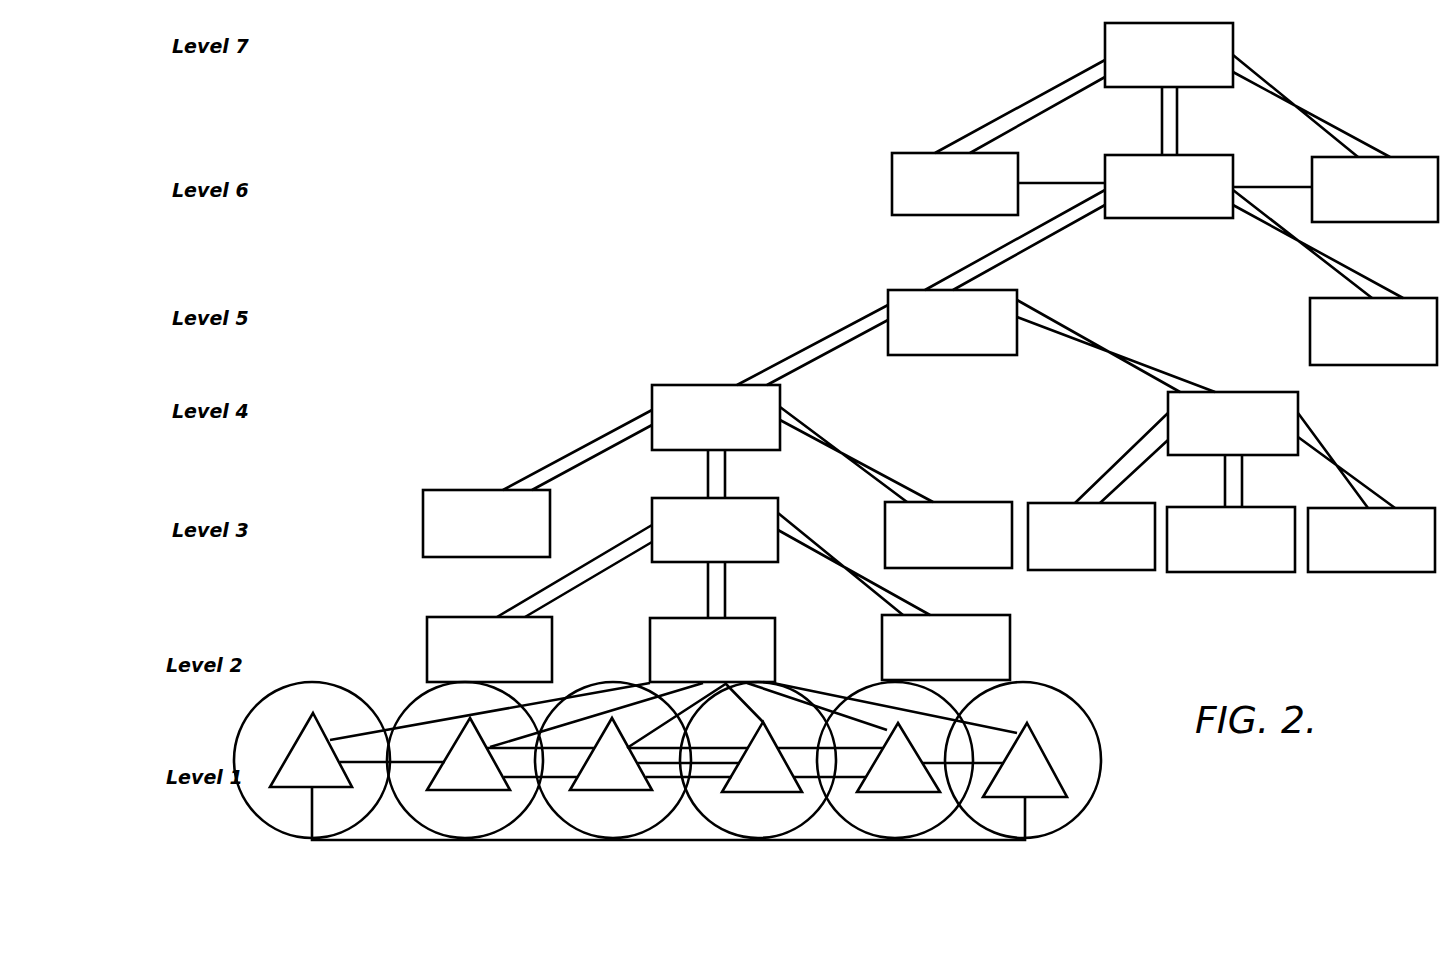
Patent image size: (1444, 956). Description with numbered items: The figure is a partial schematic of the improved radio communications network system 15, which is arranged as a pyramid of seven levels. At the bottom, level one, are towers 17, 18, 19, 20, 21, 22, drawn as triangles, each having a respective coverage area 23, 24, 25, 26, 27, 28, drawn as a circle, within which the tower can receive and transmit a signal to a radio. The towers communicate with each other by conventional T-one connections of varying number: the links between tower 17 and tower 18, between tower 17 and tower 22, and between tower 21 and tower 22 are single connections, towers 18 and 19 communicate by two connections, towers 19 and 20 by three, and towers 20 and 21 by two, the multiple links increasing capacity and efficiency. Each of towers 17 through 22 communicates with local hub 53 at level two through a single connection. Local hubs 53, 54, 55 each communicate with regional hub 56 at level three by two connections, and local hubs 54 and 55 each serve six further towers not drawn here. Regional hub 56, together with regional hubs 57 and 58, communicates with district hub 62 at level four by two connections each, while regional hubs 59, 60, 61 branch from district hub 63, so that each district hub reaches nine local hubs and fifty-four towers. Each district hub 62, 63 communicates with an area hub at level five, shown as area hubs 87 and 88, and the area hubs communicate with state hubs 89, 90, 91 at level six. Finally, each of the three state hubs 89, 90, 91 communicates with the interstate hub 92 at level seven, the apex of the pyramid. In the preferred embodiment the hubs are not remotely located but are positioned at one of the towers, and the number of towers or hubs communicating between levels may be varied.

The radio network system 15 is at (798, 82).
The tower 17 is at (300, 778).
The tower 18 is at (457, 781).
The tower 19 is at (599, 781).
The tower 20 is at (750, 783).
The tower 21 is at (885, 783).
The tower 22 is at (1014, 786).
The coverage area 23 is at (322, 822).
The coverage area 24 is at (477, 827).
The coverage area 25 is at (627, 830).
The coverage area 26 is at (772, 830).
The coverage area 27 is at (905, 830).
The coverage area 28 is at (1037, 830).
The local hub 53 is at (696, 670).
The local hub 54 is at (930, 667).
The local hub 55 is at (473, 669).
The regional hub 56 is at (699, 550).
The regional hub 57 is at (470, 543).
The regional hub 58 is at (932, 555).
The regional hub 59 is at (1075, 556).
The regional hub 60 is at (1215, 559).
The regional hub 61 is at (1355, 560).
The district hub 62 is at (700, 437).
The district hub 63 is at (1217, 443).
The area hub 87 is at (936, 342).
The area hub 88 is at (1357, 351).
The state hub 89 is at (939, 204).
The state hub 90 is at (1153, 206).
The state hub 91 is at (1359, 209).
The interstate hub 92 is at (1153, 75).